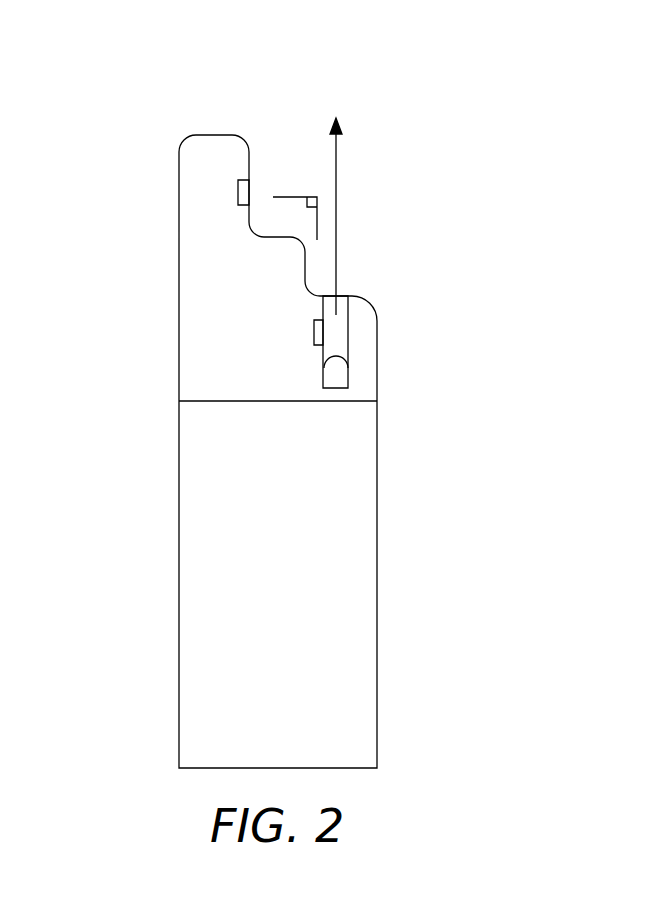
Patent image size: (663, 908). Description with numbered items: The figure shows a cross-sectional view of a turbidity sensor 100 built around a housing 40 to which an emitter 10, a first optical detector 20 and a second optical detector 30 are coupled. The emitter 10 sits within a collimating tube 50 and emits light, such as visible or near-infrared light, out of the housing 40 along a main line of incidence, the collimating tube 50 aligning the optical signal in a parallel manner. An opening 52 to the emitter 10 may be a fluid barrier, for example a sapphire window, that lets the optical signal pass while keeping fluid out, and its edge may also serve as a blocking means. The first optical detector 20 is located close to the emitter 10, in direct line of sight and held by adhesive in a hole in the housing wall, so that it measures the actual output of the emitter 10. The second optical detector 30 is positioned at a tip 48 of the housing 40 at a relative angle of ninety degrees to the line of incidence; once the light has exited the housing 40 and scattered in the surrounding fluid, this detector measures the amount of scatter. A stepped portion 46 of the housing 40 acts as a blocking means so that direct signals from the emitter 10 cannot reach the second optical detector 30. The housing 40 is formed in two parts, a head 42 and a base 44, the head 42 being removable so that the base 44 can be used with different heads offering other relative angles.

The turbidity sensor 100 is at (428, 145).
The emitter 10 is at (340, 377).
The first optical detector 20 is at (314, 333).
The second optical detector 30 is at (242, 206).
The housing 40 is at (103, 338).
The head 42 is at (178, 355).
The base 44 is at (178, 447).
The stepped portion 46 is at (273, 262).
The tip 48 is at (214, 164).
The collimating tube 50 is at (348, 328).
The opening 52 is at (340, 296).